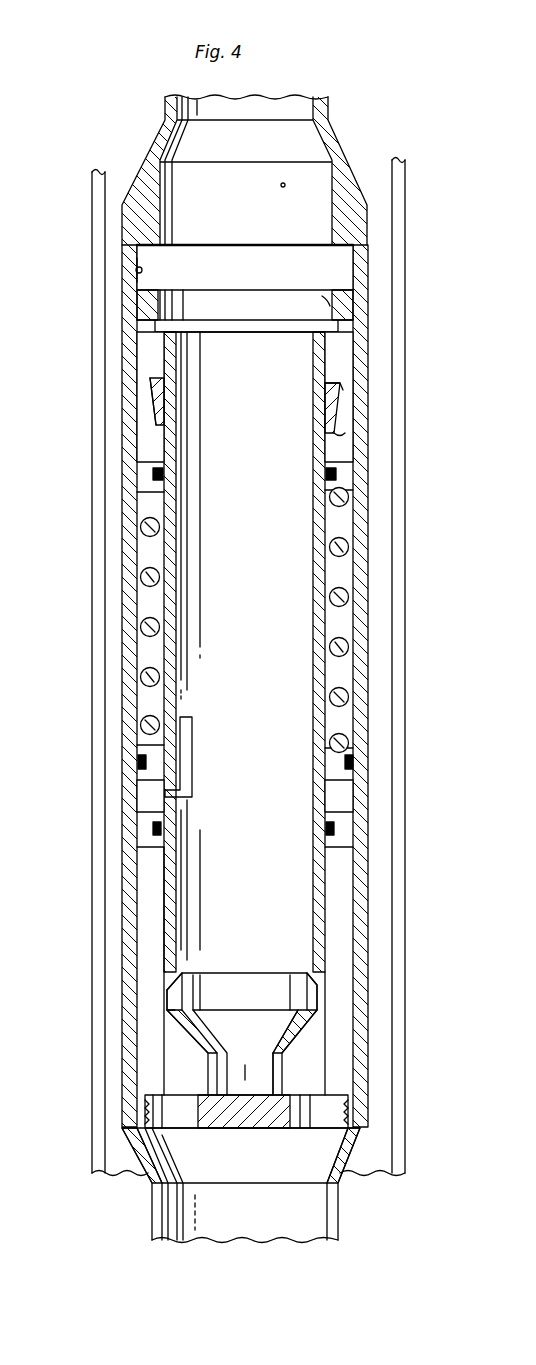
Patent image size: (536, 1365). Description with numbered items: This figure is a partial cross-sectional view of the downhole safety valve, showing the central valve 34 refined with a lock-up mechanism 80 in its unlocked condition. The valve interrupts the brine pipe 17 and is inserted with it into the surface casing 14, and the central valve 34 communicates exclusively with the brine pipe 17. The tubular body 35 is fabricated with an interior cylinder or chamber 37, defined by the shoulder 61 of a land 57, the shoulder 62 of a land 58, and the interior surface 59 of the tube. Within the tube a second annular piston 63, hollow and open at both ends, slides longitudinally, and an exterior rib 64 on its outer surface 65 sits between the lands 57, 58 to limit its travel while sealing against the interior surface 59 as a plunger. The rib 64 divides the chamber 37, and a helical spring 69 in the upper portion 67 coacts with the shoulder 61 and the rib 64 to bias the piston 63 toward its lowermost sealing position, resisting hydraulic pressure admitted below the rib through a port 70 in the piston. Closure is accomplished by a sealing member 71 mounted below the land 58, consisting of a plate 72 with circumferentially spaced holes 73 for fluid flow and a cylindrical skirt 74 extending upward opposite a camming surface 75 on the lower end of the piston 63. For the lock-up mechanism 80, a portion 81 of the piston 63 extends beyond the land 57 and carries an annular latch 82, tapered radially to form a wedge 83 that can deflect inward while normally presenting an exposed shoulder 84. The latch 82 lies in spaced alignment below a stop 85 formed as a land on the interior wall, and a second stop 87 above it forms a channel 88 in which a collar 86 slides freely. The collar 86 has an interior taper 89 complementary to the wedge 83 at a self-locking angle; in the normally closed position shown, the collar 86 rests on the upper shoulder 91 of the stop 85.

The surface casing 14 is at (405, 228).
The brine pipe 17 is at (340, 1228).
The central valve 34 is at (327, 990).
The tubular body 35 is at (355, 273).
The interior cylinder or chamber 37 is at (355, 575).
The land 57 is at (345, 475).
The land 58 is at (152, 830).
The interior surface 59 is at (350, 348).
The shoulder 61 is at (135, 497).
The shoulder 62 is at (335, 805).
The second annular piston 63 is at (313, 535).
The exterior rib 64 is at (347, 762).
The outer surface 65 is at (340, 866).
The upper portion 67 is at (347, 677).
The helical spring 69 is at (347, 603).
The port 70 is at (140, 803).
The sealing member 71 is at (322, 1030).
The plate 72 is at (340, 1085).
The holes 73 is at (330, 1110).
The cylindrical skirt 74 is at (178, 985).
The camming surface 75 is at (166, 1000).
The lock-up mechanism 80 is at (150, 357).
The portion 81 is at (164, 444).
The latch 82 is at (340, 410).
The wedge 83 is at (340, 395).
The exposed shoulder 84 is at (345, 433).
The stop 85 is at (342, 325).
The collar 86 is at (140, 297).
The second stop 87 is at (137, 262).
The channel 88 is at (135, 271).
The interior taper 89 is at (328, 303).
The upper shoulder 91 is at (150, 325).